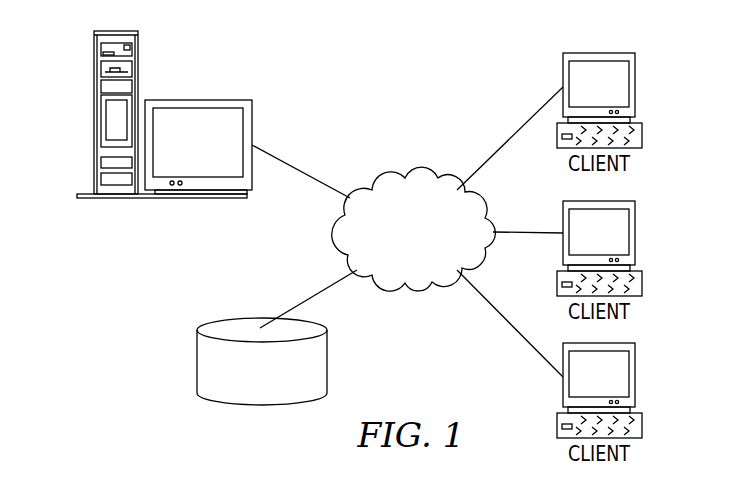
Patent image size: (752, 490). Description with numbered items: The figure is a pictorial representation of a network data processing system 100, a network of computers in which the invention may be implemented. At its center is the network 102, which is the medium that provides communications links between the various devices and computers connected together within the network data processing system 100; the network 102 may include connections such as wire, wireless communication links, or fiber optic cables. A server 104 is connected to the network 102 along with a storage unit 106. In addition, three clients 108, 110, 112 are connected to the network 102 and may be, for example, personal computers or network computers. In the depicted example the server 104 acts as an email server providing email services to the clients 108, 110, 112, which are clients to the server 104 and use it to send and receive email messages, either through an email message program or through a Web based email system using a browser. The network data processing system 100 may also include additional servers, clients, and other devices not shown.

The network data processing system 100 is at (471, 62).
The network 102 is at (383, 180).
The server 104 is at (95, 117).
The storage unit 106 is at (197, 360).
The client 108 is at (635, 86).
The client 110 is at (635, 233).
The client 112 is at (635, 377).